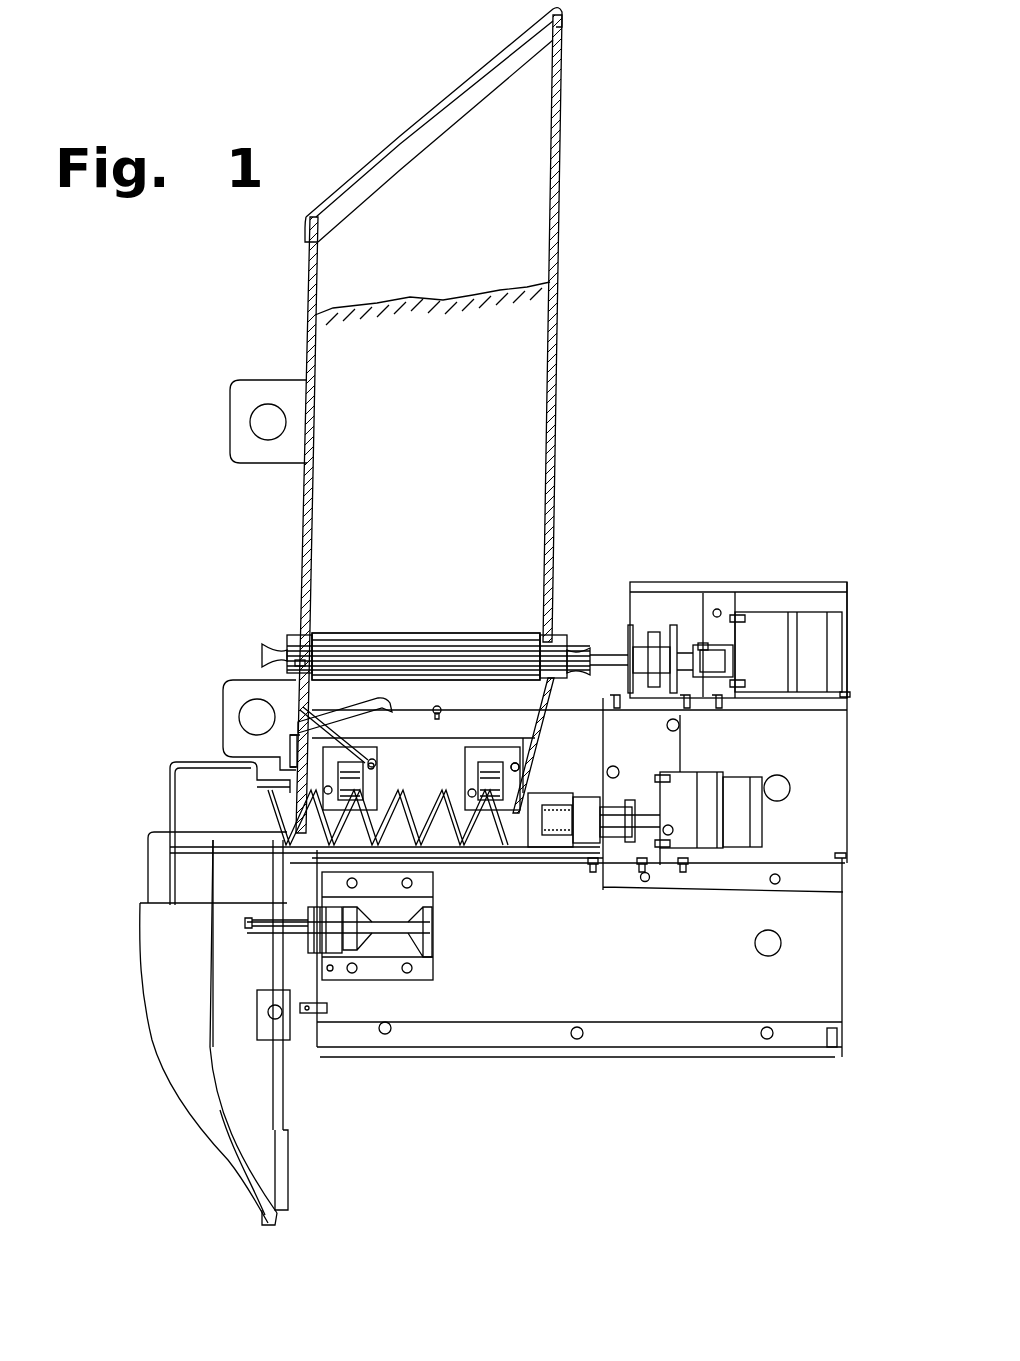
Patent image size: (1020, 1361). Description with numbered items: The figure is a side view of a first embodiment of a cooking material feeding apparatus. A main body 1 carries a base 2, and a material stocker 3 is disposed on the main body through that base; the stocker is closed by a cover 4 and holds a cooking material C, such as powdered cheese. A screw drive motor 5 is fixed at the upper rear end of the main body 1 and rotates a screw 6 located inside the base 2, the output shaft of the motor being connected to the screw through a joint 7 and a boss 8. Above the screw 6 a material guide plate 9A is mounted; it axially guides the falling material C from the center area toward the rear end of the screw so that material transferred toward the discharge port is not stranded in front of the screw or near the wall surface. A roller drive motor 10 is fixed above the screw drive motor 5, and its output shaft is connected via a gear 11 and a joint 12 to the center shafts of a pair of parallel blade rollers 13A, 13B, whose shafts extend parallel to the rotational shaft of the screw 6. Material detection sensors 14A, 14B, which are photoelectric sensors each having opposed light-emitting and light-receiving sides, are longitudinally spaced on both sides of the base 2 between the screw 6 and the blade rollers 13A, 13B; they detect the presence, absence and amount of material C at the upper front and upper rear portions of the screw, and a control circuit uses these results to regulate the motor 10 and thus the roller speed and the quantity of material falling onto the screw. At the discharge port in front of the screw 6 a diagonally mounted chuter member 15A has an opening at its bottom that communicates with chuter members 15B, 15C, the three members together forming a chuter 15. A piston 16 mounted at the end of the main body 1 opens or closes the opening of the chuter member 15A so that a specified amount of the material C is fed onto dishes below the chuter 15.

The main body 1 is at (445, 1050).
The base 2 is at (293, 707).
The material stocker 3 is at (560, 185).
The cover 4 is at (378, 150).
The screw drive motor 5 is at (735, 817).
The screw 6 is at (273, 810).
The joint 7 is at (632, 838).
The boss 8 is at (580, 817).
The material guide plate 9A is at (300, 725).
The roller drive motor 10 is at (760, 640).
The gear 11 is at (652, 625).
The joint 12 is at (580, 647).
The blade roller 13A is at (457, 636).
The blade roller 13B is at (510, 575).
The material detection sensor 14A is at (345, 790).
The material detection sensor 14B is at (485, 790).
The chuter 15 is at (150, 1037).
The chuter member 15A is at (168, 798).
The chuter member 15B is at (280, 1055).
The chuter member 15C is at (205, 1105).
The piston 16 is at (377, 1030).
The cooking material C is at (376, 303).